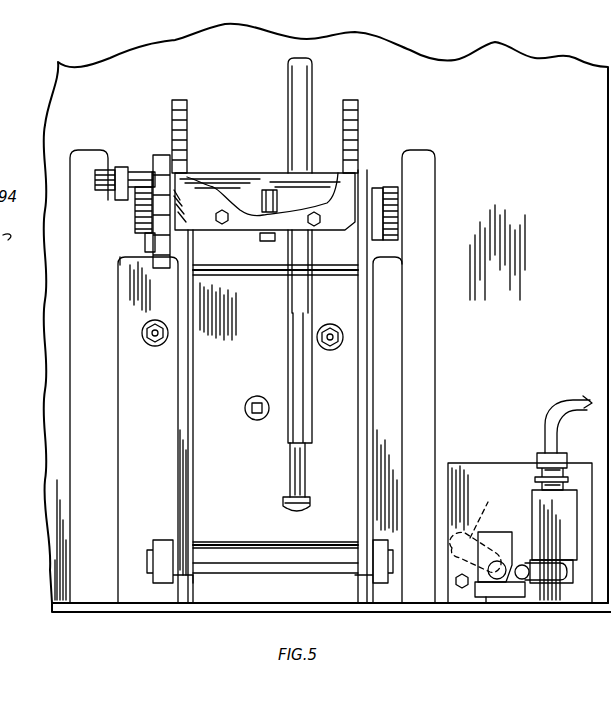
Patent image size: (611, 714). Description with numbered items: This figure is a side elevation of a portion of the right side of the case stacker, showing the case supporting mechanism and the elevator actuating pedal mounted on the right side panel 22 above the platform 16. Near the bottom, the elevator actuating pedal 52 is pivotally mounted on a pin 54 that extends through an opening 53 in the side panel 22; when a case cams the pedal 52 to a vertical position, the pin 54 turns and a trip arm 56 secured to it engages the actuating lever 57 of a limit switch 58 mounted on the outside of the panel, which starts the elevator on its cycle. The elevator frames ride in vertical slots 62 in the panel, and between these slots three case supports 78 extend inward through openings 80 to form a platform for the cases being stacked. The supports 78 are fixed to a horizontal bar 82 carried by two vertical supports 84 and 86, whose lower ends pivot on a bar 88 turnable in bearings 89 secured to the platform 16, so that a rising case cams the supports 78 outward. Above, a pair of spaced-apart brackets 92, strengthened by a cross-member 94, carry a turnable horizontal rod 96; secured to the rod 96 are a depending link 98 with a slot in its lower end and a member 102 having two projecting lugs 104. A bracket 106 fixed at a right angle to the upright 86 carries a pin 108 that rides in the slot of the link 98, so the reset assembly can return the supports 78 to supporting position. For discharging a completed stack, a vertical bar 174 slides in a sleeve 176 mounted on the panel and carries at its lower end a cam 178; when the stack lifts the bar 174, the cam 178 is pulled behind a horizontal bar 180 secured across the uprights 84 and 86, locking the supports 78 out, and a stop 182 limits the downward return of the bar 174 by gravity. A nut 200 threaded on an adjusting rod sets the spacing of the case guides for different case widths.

The platform 16 is at (53, 607).
The side panel 22 is at (556, 218).
The pedal 52 is at (520, 533).
The opening 53 is at (488, 597).
The pin 54 is at (492, 578).
The trip arm 56 is at (498, 540).
The actuating lever 57 is at (534, 584).
The limit switch 58 is at (560, 530).
The vertical slot 62 is at (75, 322).
The case support 78 is at (133, 222).
The opening 80 is at (392, 262).
The horizontal bar 82 is at (375, 188).
The vertical support 84 is at (367, 414).
The vertical support 86 is at (178, 455).
The bar 88 is at (247, 570).
The bearing 89 is at (228, 224).
The bracket 92 is at (182, 148).
The cross-member 94 is at (207, 218).
The horizontal rod 96 is at (205, 180).
The depending link 98 is at (162, 158).
The member 102 is at (122, 166).
The projecting lug 104 is at (106, 200).
The bracket 106 is at (165, 278).
The pin 108 is at (145, 250).
The vertical bar 174 is at (300, 473).
The sleeve 176 is at (306, 100).
The cam 178 is at (303, 392).
The horizontal bar 180 is at (247, 290).
The stop 182 is at (303, 511).
The nut 200 is at (148, 340).